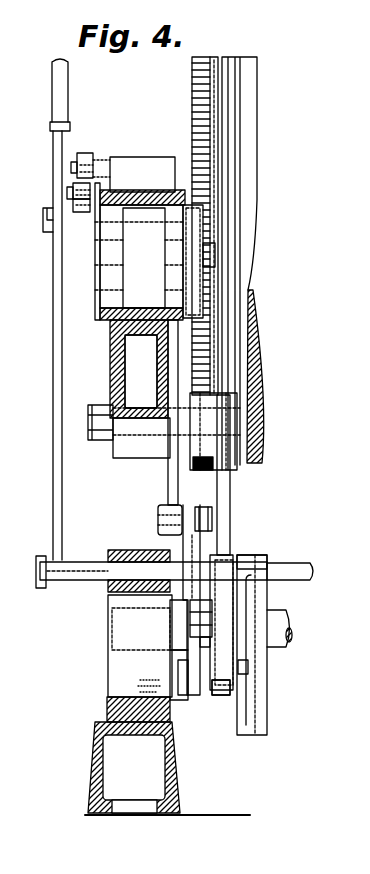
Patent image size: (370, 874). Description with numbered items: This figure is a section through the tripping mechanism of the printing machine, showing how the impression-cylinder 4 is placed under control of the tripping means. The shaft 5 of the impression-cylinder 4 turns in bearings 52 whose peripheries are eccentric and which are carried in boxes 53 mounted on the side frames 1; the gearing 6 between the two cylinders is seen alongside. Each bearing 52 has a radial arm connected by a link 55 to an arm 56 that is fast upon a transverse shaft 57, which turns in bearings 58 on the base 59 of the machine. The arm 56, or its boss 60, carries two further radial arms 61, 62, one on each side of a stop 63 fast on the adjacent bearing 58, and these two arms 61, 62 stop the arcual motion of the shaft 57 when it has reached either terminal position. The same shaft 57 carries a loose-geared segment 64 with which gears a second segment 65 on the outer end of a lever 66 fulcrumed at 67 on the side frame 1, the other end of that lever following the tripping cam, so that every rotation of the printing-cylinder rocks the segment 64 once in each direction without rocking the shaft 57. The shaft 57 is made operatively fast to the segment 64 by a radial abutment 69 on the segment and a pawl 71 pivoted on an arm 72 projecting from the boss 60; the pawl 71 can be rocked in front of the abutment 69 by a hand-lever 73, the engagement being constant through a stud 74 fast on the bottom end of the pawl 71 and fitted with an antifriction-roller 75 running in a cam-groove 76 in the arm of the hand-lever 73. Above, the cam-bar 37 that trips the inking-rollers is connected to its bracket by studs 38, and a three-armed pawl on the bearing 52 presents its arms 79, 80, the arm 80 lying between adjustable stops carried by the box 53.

The side frames 1 is at (141, 371).
The impression-cylinder 4 is at (250, 97).
The impression-cylinder shaft 5 is at (87, 251).
The gearing 6 is at (192, 72).
The cam-bar 37 is at (83, 153).
The studs 38 is at (71, 167).
The bearings 52 is at (255, 252).
The boxes 53 is at (110, 324).
The link 55 is at (170, 470).
The arm 56 is at (187, 543).
The transverse shaft 57 is at (108, 622).
The bearings 58 is at (125, 622).
The base 59 is at (134, 755).
The boss 60 is at (115, 602).
The radial arm 61 is at (178, 640).
The radial arm 62 is at (178, 670).
The stop 63 is at (186, 690).
The loose-geared segment 64 is at (230, 700).
The second segment 65 is at (238, 518).
The lever 66 is at (238, 475).
The fulcrum 67 is at (236, 462).
The radial abutment 69 is at (250, 560).
The pawl 71 is at (221, 638).
The arm 72 is at (197, 615).
The hand-lever 73 is at (52, 347).
The stud 74 is at (205, 647).
The antifriction-roller 75 is at (243, 674).
The cam-groove 76 is at (250, 697).
The pawl arm 79 is at (67, 193).
The pawl arm 80 is at (82, 212).